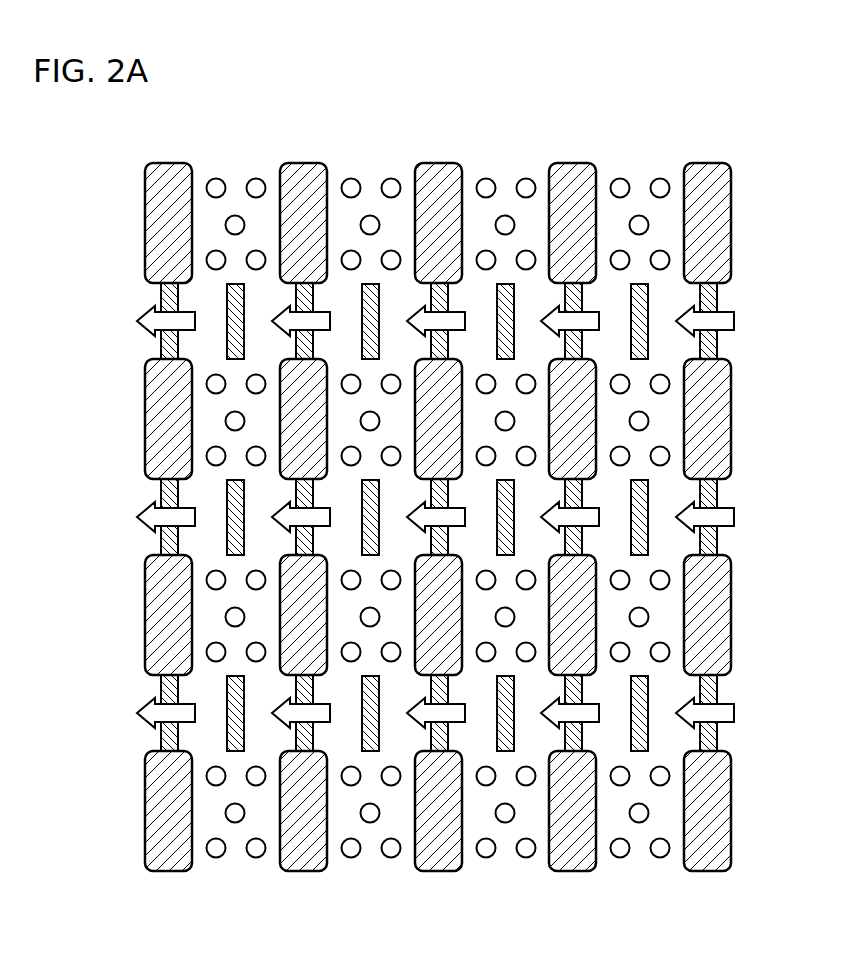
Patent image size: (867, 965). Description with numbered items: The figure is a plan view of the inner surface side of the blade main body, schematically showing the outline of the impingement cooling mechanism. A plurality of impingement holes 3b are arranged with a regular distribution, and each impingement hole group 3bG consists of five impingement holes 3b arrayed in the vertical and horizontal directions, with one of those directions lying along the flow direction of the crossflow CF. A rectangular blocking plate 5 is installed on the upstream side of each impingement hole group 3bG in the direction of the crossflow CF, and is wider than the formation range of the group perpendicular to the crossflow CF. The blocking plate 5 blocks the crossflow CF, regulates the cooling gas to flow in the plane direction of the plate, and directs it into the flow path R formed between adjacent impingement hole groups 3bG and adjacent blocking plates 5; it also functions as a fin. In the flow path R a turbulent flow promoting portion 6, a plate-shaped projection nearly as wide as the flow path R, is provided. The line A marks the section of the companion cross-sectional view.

The blocking plate 5 is at (170, 222).
The flow path R is at (210, 303).
The crossflow CF is at (155, 330).
The turbulent flow promoting portion 6 is at (228, 348).
The impingement hole 3b is at (351, 178).
The impingement hole group 3bG is at (237, 144).
The A-A line A is at (140, 418).